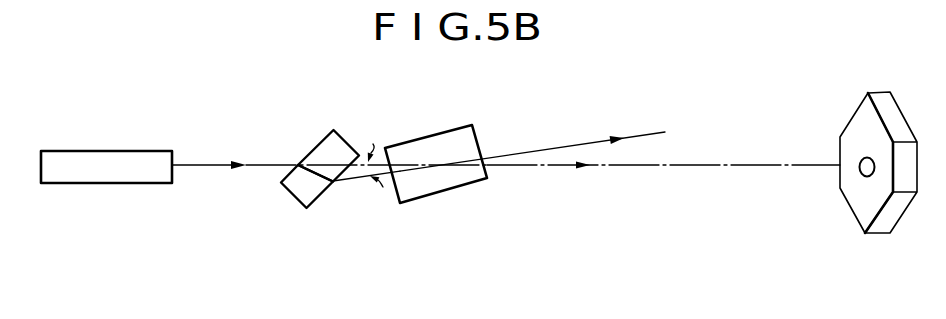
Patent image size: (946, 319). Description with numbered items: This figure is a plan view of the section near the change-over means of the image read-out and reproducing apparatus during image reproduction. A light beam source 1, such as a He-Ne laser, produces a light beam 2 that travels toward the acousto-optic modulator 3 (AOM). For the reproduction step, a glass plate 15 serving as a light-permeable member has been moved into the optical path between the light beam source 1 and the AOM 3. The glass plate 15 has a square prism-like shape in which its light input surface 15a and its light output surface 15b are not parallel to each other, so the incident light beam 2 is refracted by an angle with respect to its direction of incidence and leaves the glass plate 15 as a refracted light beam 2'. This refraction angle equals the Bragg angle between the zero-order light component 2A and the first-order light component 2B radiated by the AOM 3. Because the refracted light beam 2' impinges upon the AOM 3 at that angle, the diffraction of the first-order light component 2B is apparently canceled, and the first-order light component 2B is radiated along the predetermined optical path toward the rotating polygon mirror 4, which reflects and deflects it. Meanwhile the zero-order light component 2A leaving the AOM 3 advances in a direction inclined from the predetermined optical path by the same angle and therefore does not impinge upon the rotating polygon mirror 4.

The light beam source 1 is at (96, 151).
The light beam 2 is at (209, 139).
The glass plate 15 is at (322, 170).
The light input surface 15a is at (319, 149).
The light output surface 15b is at (324, 201).
The light beam 2' is at (366, 215).
The acousto-optic modulator 3 is at (441, 133).
The zero-order light component 2A is at (566, 146).
The first-order light component 2B is at (638, 168).
The rotating polygon mirror 4 is at (852, 121).